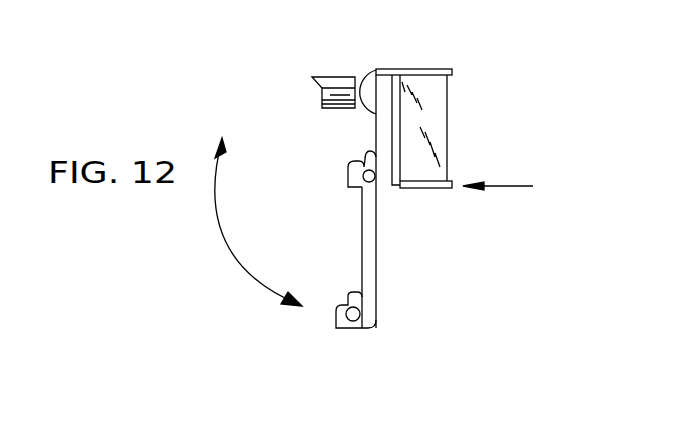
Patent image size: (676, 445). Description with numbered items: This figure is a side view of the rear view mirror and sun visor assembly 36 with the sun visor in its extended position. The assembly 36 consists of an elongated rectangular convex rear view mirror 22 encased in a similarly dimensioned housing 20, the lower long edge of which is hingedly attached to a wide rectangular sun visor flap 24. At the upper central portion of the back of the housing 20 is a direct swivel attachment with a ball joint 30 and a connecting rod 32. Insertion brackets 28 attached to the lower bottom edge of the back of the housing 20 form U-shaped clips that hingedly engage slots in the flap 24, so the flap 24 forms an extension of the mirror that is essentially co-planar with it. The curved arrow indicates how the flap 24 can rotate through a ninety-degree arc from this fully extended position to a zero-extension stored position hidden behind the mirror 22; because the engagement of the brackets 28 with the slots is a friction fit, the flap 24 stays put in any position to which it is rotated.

The housing 20 is at (383, 128).
The rear view mirror 22 is at (433, 126).
The sun visor flap 24 is at (370, 262).
The insertion brackets 28 is at (350, 172).
The ball joint 30 is at (370, 82).
The connecting rod 32 is at (332, 85).
The rear view mirror and sun visor assembly 36 is at (537, 192).